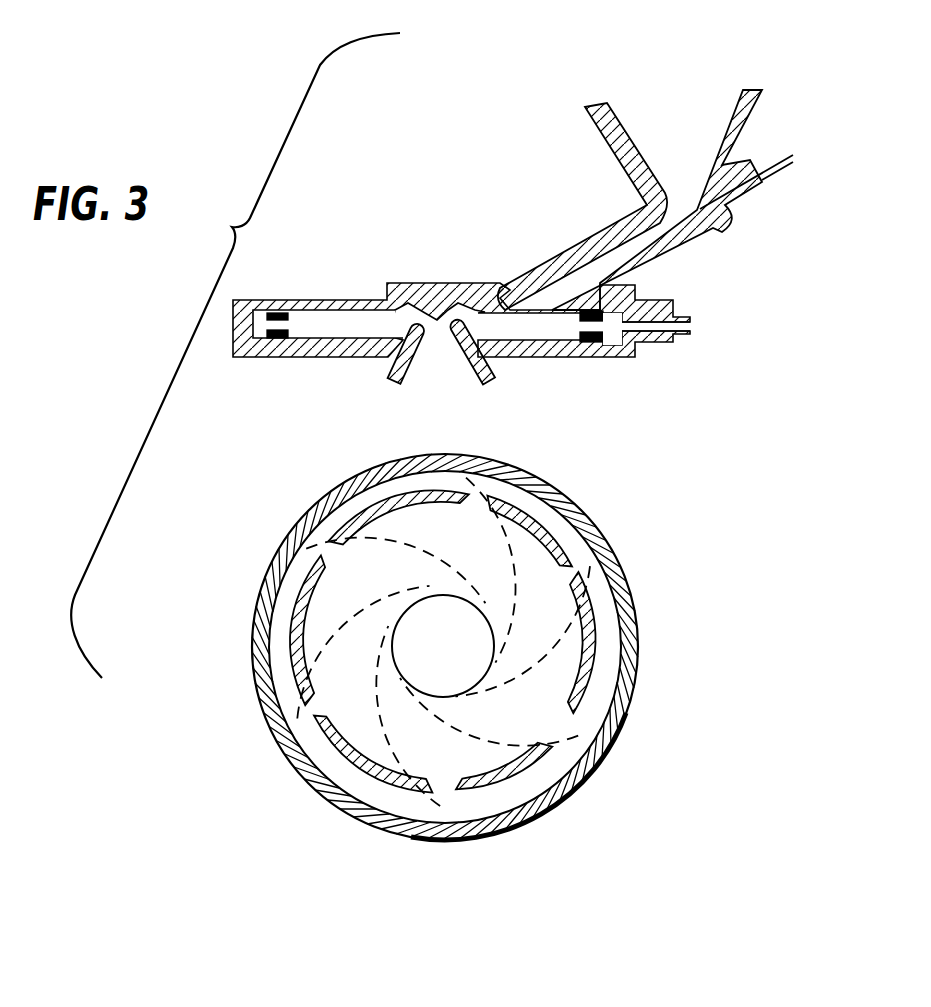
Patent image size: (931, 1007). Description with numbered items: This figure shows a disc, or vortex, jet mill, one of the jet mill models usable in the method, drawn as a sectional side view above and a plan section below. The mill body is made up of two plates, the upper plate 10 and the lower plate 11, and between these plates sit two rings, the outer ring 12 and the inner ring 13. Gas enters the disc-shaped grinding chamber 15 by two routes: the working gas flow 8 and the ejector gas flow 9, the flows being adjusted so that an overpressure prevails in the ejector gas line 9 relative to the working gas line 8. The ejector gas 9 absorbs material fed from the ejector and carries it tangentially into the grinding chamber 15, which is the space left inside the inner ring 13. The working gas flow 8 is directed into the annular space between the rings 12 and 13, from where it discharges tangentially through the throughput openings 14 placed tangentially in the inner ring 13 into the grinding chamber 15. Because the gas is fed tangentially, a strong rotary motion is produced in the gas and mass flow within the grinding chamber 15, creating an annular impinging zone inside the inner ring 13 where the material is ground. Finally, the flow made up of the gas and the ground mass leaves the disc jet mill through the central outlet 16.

The working gas flow 8 is at (693, 320).
The ejector gas flow 9 is at (779, 155).
The upper plate 10 is at (335, 300).
The lower plate 11 is at (627, 357).
The outer ring 12 is at (628, 620).
The inner ring 13 is at (562, 737).
The throughput openings 14 is at (598, 548).
The grinding chamber 15 is at (383, 323).
The central outlet 16 is at (433, 357).